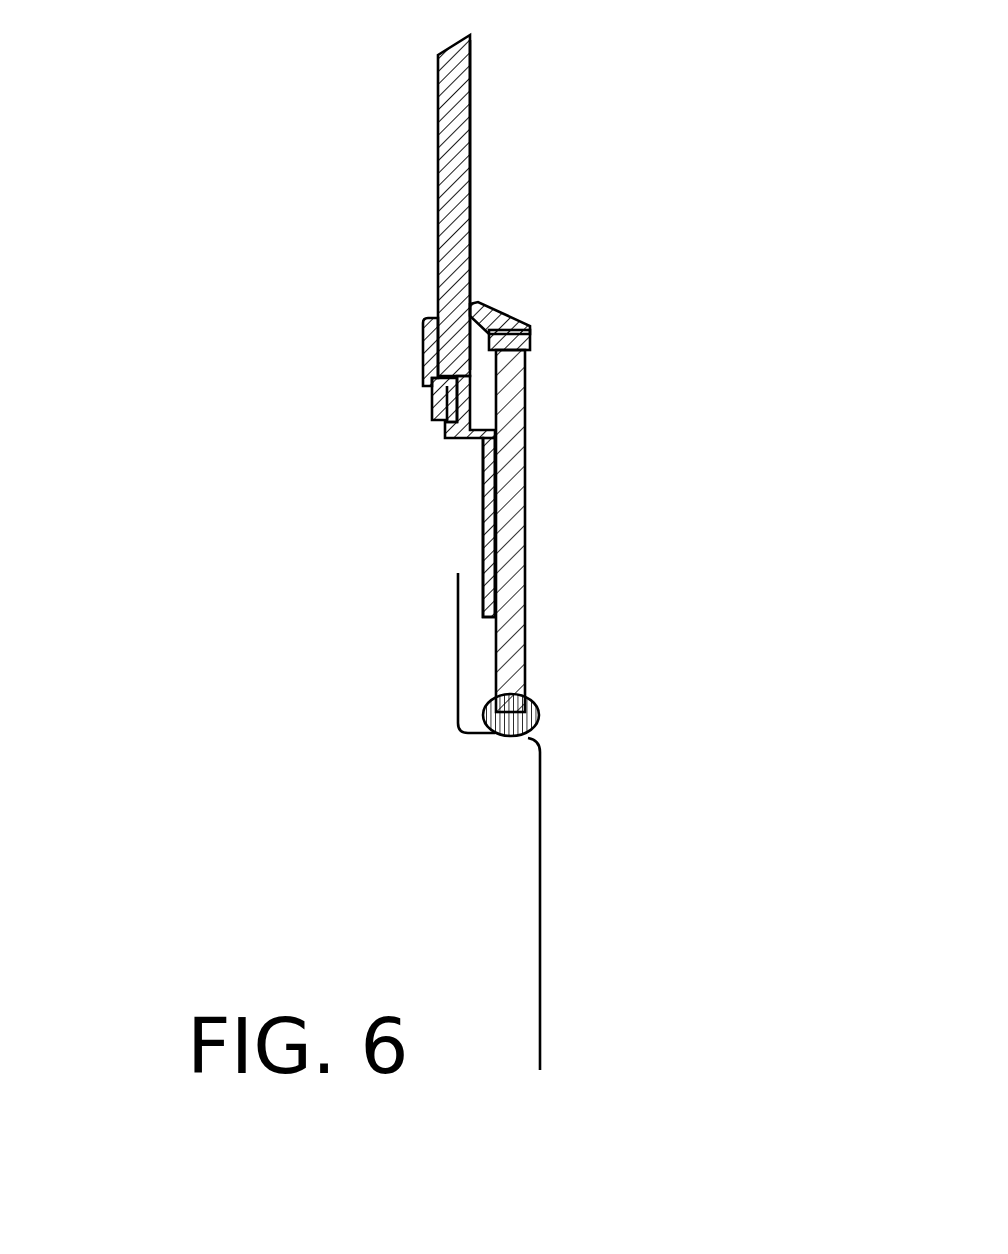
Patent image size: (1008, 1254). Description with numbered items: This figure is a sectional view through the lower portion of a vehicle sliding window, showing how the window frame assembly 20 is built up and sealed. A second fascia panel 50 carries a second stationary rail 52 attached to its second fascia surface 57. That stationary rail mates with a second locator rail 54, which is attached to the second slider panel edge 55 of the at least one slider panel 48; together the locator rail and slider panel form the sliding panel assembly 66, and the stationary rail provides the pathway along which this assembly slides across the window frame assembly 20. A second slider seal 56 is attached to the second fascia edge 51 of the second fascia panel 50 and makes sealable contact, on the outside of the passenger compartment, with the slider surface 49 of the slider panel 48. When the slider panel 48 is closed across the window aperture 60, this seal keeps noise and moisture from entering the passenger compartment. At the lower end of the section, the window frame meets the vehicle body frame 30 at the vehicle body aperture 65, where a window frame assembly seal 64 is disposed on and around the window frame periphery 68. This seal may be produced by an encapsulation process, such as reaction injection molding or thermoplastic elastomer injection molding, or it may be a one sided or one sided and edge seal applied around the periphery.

The window frame assembly 20 is at (285, 355).
The vehicle body frame 30 is at (541, 893).
The slider panel 48 is at (457, 137).
The slider surface 49 is at (472, 163).
The second fascia panel 50 is at (523, 433).
The second fascia edge 51 is at (527, 355).
The second stationary rail 52 is at (483, 513).
The second locator rail 54 is at (423, 327).
The second slider panel edge 55 is at (433, 397).
The second slider seal 56 is at (503, 313).
The second fascia surface 57 is at (527, 545).
The window aperture 60 is at (600, 73).
The window frame assembly seal 64 is at (540, 710).
The vehicle body aperture 65 is at (620, 722).
The sliding panel assembly 66 is at (300, 213).
The window frame periphery 68 is at (500, 733).